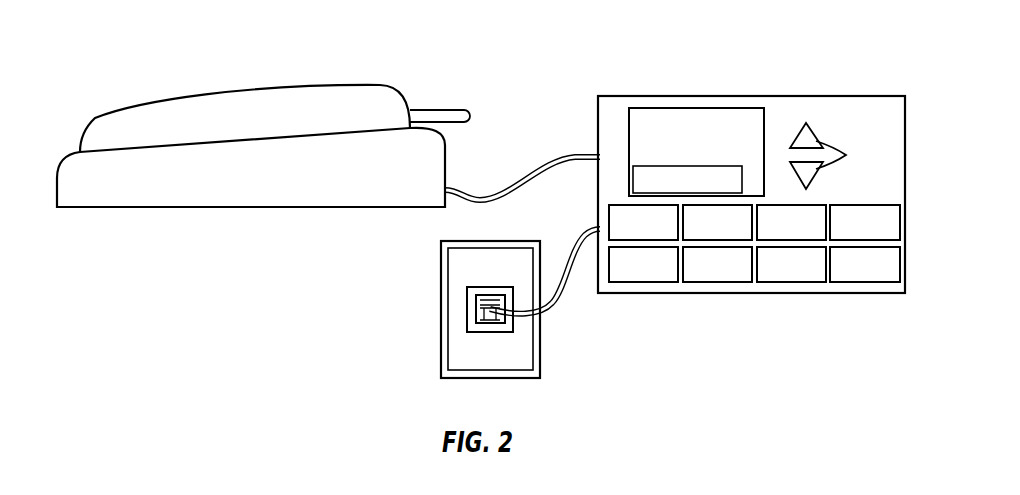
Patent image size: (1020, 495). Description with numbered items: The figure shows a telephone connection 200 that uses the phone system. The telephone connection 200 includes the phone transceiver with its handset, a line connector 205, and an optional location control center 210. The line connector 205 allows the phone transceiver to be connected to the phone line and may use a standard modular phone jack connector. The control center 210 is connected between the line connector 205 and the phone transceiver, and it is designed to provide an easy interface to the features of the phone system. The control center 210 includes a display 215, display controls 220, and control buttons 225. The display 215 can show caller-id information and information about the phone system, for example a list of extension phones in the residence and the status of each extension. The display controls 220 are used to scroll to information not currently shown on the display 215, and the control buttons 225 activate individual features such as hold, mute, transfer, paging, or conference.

The telephone connection 200 is at (203, 47).
The line connector 205 is at (548, 309).
The location control center 210 is at (857, 97).
The display 215 is at (665, 108).
The display controls 220 is at (841, 156).
The control buttons 225 is at (798, 283).